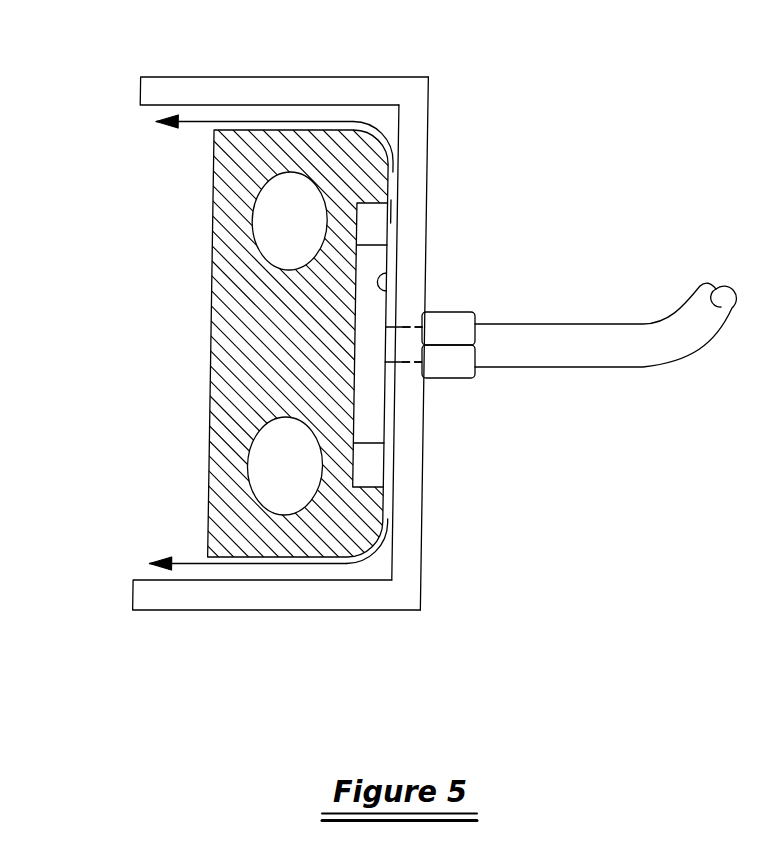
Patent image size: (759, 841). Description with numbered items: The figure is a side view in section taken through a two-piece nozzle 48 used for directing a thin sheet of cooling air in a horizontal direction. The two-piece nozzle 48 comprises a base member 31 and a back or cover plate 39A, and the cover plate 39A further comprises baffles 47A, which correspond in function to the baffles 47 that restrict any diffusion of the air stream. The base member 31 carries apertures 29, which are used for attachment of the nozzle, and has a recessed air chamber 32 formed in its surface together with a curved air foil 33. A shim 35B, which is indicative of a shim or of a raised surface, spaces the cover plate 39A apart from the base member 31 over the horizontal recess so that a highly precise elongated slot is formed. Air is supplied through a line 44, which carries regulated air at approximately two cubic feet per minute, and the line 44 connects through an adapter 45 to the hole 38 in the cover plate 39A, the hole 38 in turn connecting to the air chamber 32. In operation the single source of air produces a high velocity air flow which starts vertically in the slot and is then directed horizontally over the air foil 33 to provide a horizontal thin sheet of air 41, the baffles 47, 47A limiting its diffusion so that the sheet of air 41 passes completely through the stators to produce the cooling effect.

The apertures 29 is at (258, 222).
The base member 31 is at (178, 329).
The recessed air chamber 32 is at (378, 406).
The curved air foil 33 is at (390, 152).
The shim 35B is at (382, 276).
The air hole 38 is at (402, 364).
The back or cover plate 39A is at (413, 217).
The air stream 41 is at (238, 122).
The air line 44 is at (608, 326).
The adapter 45 is at (452, 312).
The baffle 47 is at (222, 602).
The baffles 47A is at (357, 83).
The two-piece nozzle 48 is at (500, 66).